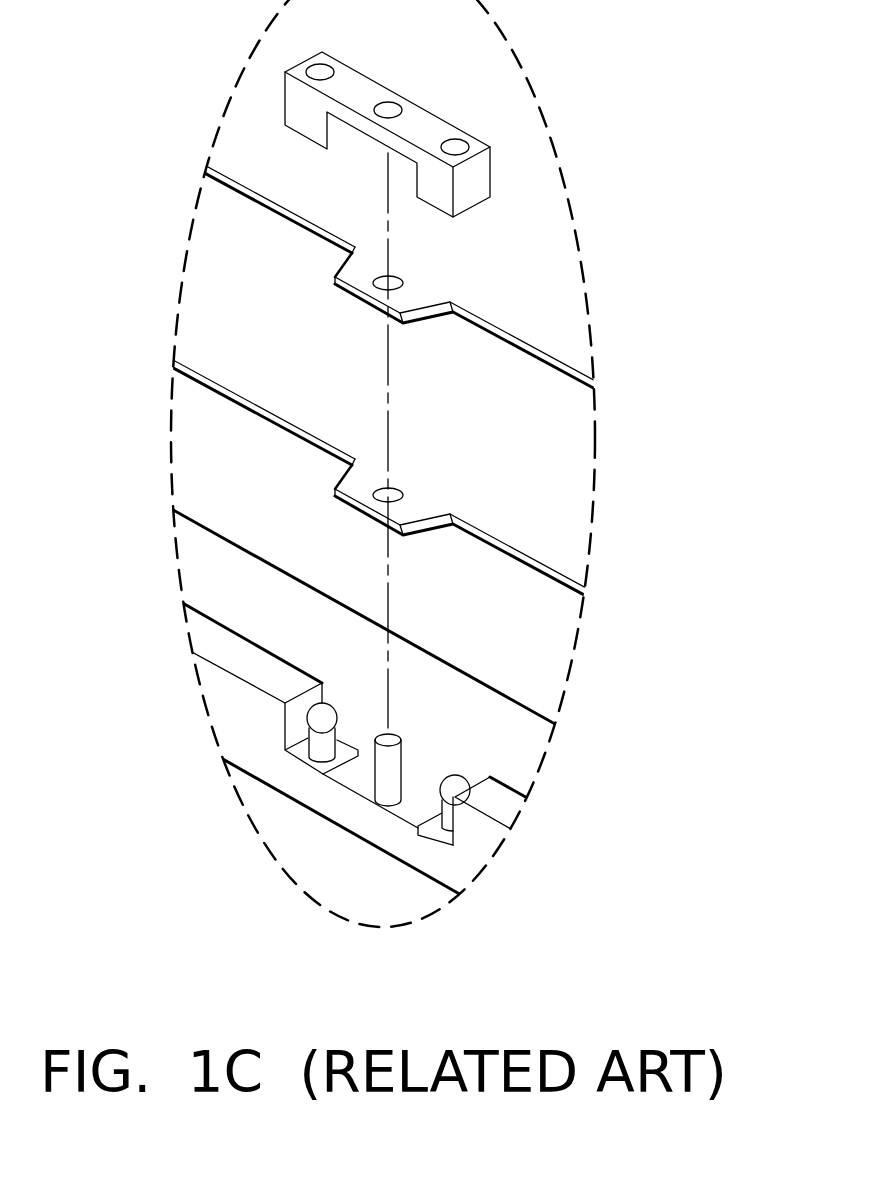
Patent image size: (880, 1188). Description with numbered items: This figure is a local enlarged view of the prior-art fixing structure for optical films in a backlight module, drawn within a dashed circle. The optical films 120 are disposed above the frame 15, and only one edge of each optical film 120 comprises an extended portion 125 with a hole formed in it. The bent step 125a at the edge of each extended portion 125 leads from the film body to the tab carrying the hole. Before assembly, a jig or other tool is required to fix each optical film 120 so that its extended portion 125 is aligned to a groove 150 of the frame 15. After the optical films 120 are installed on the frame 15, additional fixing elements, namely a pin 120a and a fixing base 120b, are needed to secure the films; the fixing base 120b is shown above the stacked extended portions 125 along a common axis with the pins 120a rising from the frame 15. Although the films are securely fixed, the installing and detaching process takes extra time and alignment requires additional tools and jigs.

The base plate 15 is at (455, 870).
The optical film 120 is at (563, 338).
The pin 120a is at (440, 826).
The fixing base 120b is at (427, 122).
The extended portion 125 is at (372, 284).
The bent portion of elastic arm 125a is at (345, 262).
The groove 150 is at (423, 780).